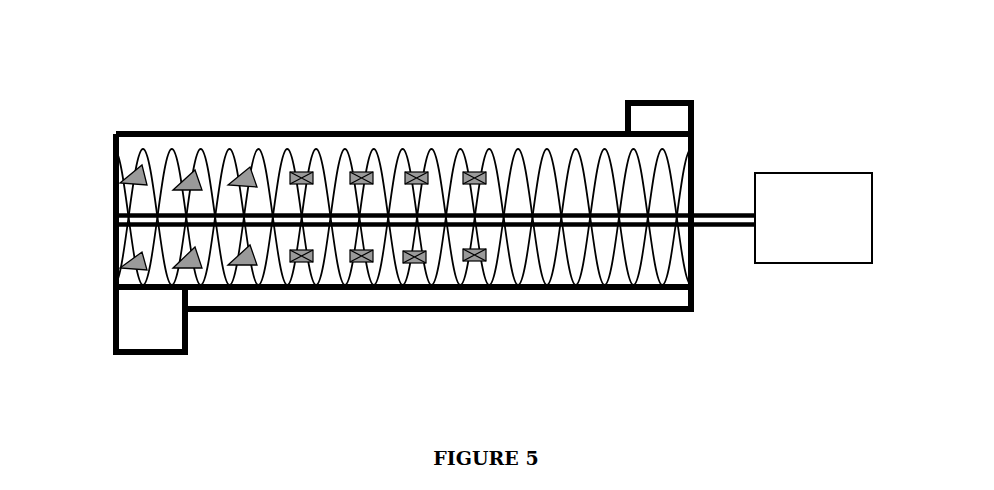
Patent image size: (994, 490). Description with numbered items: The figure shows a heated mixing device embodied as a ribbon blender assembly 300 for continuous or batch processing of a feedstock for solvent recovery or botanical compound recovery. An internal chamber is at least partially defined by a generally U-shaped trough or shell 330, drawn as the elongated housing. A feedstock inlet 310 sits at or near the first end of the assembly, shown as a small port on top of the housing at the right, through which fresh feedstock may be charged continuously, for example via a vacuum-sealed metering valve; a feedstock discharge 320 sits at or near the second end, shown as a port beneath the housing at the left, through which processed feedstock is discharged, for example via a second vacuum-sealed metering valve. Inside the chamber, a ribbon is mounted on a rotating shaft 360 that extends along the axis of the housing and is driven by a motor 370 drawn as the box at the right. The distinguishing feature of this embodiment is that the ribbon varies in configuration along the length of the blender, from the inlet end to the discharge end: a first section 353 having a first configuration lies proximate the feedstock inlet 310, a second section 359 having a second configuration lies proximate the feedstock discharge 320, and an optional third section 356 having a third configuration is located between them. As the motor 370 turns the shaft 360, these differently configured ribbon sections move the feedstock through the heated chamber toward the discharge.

The ribbon blender assembly 300 is at (155, 91).
The feedstock inlet 310 is at (645, 118).
The feedstock discharge 320 is at (137, 332).
The U-shaped trough or shell 330 is at (458, 287).
The first section of the ribbon 353 is at (582, 153).
The third section of the ribbon 356 is at (412, 150).
The second section of the ribbon 359 is at (177, 162).
The drive shaft 360 is at (710, 225).
The motor 370 is at (802, 207).